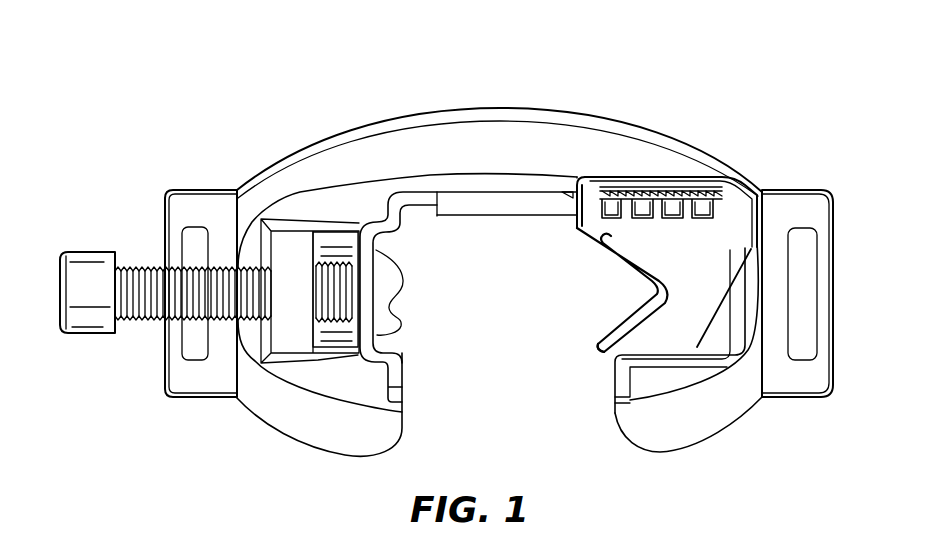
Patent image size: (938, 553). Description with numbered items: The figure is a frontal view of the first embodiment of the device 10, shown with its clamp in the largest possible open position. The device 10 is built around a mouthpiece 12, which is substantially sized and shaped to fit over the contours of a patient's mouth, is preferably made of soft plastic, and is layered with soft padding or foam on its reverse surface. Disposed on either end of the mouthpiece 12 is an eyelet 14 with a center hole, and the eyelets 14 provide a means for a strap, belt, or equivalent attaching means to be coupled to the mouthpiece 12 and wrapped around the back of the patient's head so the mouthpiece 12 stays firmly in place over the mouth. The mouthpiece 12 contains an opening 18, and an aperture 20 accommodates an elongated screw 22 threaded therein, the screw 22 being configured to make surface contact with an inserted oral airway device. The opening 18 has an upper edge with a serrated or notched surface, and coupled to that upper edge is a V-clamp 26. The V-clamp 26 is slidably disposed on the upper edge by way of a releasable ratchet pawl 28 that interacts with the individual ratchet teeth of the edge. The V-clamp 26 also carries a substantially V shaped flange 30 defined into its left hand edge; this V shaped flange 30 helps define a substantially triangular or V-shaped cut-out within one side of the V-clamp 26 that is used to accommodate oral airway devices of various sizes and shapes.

The device 10 is at (850, 155).
The mouthpiece 12 is at (593, 118).
The eyelet 14 is at (182, 377).
The opening 18 is at (447, 272).
The aperture 20 is at (332, 250).
The elongated screw 22 is at (78, 262).
The V-clamp 26 is at (705, 265).
The releasable ratchet pawl 28 is at (657, 203).
The V shaped flange 30 is at (600, 350).